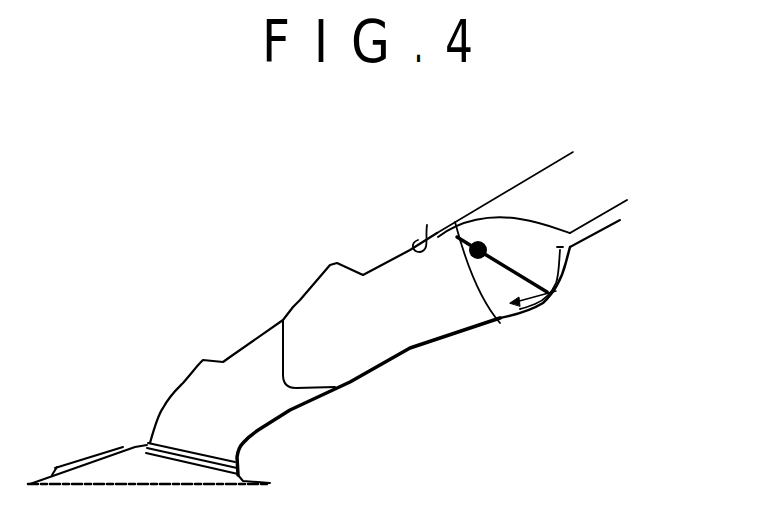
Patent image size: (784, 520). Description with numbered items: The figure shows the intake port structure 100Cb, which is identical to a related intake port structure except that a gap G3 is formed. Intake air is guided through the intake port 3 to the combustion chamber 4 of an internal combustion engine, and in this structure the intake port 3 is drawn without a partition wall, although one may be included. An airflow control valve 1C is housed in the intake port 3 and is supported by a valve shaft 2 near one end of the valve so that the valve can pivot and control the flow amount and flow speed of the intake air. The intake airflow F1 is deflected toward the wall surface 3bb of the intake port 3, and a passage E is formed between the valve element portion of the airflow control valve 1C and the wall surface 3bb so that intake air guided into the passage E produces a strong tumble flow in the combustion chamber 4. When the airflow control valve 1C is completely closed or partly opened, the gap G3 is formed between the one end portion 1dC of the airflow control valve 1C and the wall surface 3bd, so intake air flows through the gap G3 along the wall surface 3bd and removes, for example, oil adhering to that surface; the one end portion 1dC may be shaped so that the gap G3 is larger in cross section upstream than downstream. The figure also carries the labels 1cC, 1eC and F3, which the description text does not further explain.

The intake port structure 100Cb is at (657, 167).
The airflow control valve 1C is at (566, 271).
The inner surface of hook 1cC is at (503, 275).
The one end portion of the airflow control valve 1dC is at (560, 291).
The pivot pin 1eC is at (481, 241).
The valve shaft 2 is at (512, 216).
The intake port 3 is at (293, 300).
The wall surface of the intake port 3bb is at (427, 225).
The wall surface 3bd is at (537, 306).
The combustion chamber 4 is at (101, 471).
The passage E is at (456, 234).
The intake airflow F1 is at (533, 223).
The force direction F3 is at (570, 247).
The gap G3 is at (553, 301).